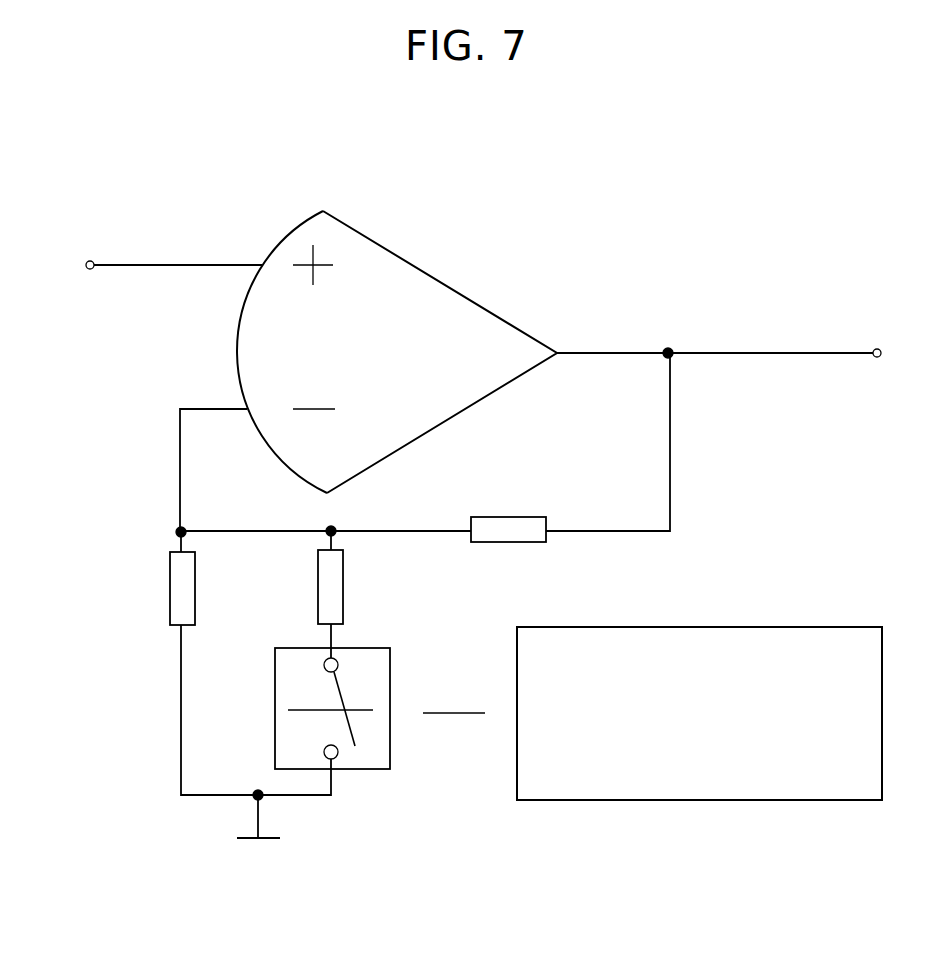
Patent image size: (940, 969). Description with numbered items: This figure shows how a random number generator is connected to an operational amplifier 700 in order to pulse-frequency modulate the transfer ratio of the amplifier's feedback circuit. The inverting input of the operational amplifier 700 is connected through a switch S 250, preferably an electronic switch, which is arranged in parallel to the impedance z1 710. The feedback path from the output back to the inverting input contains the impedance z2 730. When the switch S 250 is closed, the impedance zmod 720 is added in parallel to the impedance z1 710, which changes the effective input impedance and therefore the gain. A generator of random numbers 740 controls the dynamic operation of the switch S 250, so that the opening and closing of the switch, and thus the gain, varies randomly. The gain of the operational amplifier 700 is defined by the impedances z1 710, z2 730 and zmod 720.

The operational amplifier 700 is at (523, 137).
The impedance z1 710 is at (170, 582).
The impedance zmod 720 is at (343, 566).
The impedance z2 730 is at (507, 542).
The switch S 250 is at (371, 648).
The generator of random numbers 740 is at (682, 626).